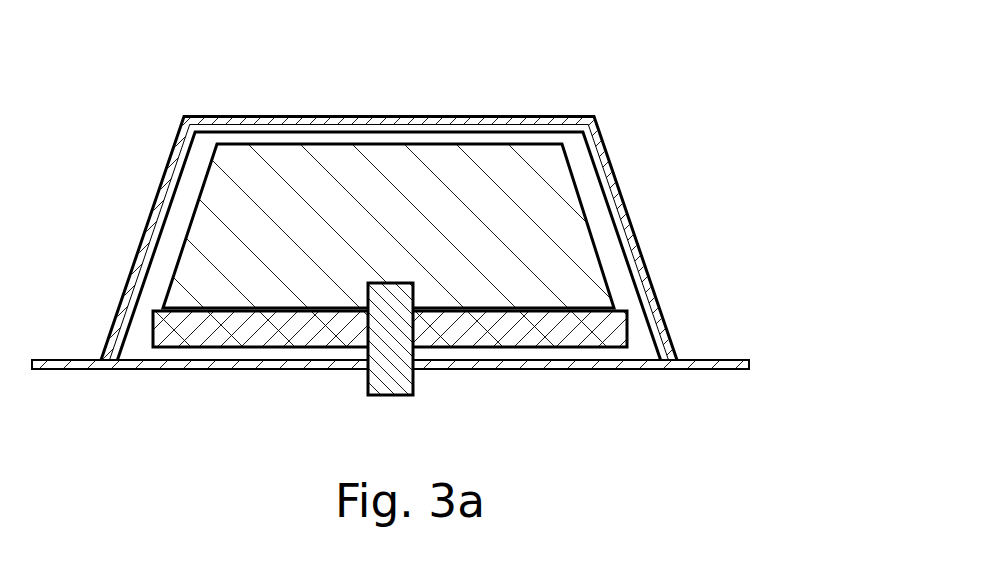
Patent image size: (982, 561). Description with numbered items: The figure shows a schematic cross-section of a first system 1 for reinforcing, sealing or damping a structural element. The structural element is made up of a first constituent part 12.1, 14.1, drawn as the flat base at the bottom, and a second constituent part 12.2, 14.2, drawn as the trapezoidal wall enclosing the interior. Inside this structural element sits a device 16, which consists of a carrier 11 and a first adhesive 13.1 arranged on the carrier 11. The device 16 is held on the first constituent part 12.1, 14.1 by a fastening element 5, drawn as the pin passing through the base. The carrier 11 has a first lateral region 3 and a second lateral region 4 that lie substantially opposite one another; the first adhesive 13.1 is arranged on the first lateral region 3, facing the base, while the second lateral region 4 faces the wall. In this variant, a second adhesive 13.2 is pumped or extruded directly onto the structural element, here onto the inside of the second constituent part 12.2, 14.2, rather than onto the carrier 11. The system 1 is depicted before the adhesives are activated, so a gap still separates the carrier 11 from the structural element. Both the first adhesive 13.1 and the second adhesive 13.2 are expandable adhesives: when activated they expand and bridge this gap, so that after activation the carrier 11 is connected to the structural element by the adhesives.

The first system 1 is at (165, 75).
The first lateral region 3 is at (300, 314).
The second lateral region 4 is at (252, 143).
The fastening element 5 is at (397, 360).
The carrier 11 is at (350, 168).
The first constituent part 12.1 is at (147, 365).
The second constituent part 12.2 is at (625, 200).
The first adhesive 13.1 is at (515, 330).
The second adhesive 13.2 is at (490, 128).
The first constituent part 14.1 is at (390, 364).
The second constituent part 14.2 is at (388, 246).
The device 16 is at (614, 270).